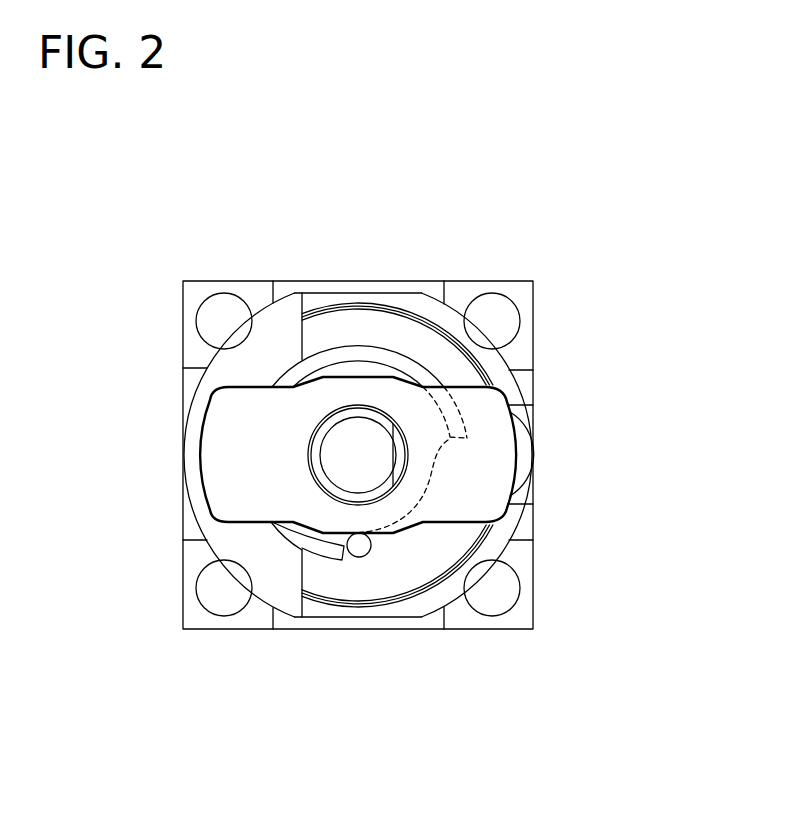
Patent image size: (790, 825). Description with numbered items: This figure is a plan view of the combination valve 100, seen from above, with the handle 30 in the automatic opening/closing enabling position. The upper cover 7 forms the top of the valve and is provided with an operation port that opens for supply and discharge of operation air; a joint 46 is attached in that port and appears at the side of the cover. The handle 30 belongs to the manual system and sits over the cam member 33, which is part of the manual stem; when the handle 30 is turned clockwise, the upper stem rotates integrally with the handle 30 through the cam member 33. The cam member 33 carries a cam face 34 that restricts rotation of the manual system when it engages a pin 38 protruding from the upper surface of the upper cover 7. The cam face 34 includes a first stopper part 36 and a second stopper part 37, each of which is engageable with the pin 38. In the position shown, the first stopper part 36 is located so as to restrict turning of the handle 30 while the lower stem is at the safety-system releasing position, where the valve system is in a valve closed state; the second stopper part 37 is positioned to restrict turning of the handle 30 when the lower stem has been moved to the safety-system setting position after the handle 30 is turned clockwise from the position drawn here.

The actuator assembly 100 is at (374, 185).
The upper cover 7 is at (512, 379).
The handle 30 is at (220, 466).
The cam member 33 is at (353, 433).
The cam face 34 is at (424, 493).
The first stopper part 36 is at (345, 556).
The second stopper part 37 is at (448, 440).
The pin 38 is at (363, 548).
The joint 46 is at (519, 481).